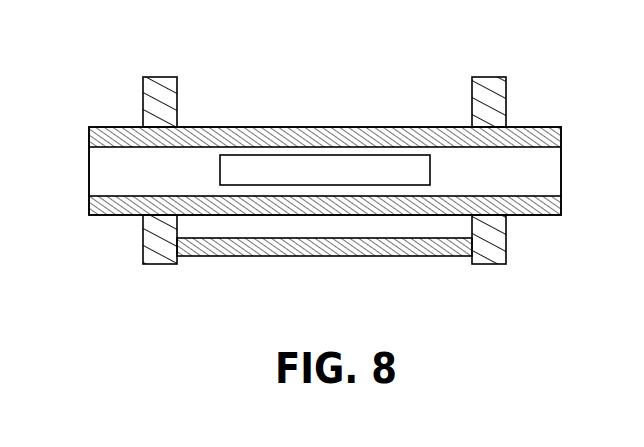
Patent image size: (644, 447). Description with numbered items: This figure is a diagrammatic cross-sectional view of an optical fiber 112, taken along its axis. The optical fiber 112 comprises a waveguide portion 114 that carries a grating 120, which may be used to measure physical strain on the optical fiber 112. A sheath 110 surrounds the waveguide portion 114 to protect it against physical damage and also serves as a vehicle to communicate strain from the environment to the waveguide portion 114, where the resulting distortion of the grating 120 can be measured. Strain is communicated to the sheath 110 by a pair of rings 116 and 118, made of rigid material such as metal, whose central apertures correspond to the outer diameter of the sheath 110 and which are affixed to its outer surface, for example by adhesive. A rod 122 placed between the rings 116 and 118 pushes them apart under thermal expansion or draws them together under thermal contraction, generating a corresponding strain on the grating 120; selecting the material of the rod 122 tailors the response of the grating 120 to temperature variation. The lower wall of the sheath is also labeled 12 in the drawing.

The lower wall of housing 12 is at (565, 207).
The sheath 110 is at (112, 206).
The optical fiber 112 is at (283, 126).
The waveguide portion 114 is at (545, 172).
The ring 116 is at (487, 92).
The ring 118 is at (160, 92).
The grating 120 is at (392, 167).
The rod 122 is at (322, 257).